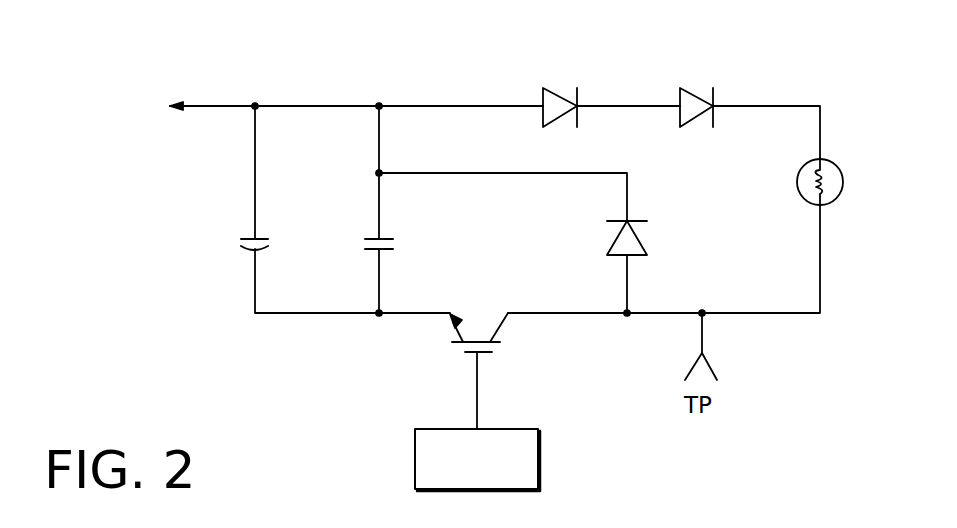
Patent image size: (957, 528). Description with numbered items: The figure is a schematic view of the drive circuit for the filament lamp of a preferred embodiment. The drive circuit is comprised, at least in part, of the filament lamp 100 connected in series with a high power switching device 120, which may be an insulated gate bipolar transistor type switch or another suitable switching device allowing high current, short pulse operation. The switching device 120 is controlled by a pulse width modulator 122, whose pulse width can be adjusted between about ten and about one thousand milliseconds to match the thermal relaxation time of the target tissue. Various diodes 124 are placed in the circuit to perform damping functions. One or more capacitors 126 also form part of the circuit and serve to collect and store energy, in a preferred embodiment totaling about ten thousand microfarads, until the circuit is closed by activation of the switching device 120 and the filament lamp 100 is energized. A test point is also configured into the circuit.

The filament lamp 100 is at (798, 190).
The high power switching device 120 is at (468, 354).
The pulse width modulator 122 is at (540, 463).
The diodes 124 is at (688, 92).
The capacitors 126 is at (367, 238).